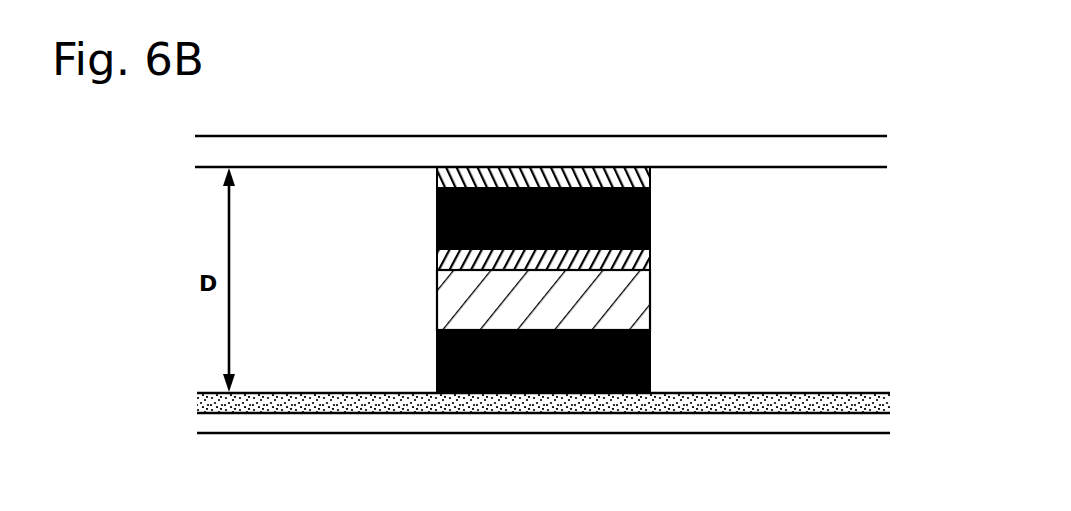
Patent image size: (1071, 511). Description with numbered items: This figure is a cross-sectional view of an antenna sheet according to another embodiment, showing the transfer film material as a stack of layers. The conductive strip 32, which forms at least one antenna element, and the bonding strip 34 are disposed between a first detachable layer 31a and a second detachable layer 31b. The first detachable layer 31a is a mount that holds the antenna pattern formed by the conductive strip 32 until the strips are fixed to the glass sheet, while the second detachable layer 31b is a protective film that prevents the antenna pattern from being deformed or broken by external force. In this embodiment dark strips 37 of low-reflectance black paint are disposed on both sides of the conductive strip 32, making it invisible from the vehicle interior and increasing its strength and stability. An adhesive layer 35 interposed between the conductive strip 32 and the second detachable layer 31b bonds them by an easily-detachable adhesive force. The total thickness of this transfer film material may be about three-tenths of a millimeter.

The first detachable layer 31a is at (332, 148).
The second detachable layer 31b is at (313, 425).
The conductive strip 32 is at (645, 297).
The bonding strip 34 is at (518, 170).
The adhesive layer 35 is at (868, 392).
The dark strip 37 is at (651, 212).